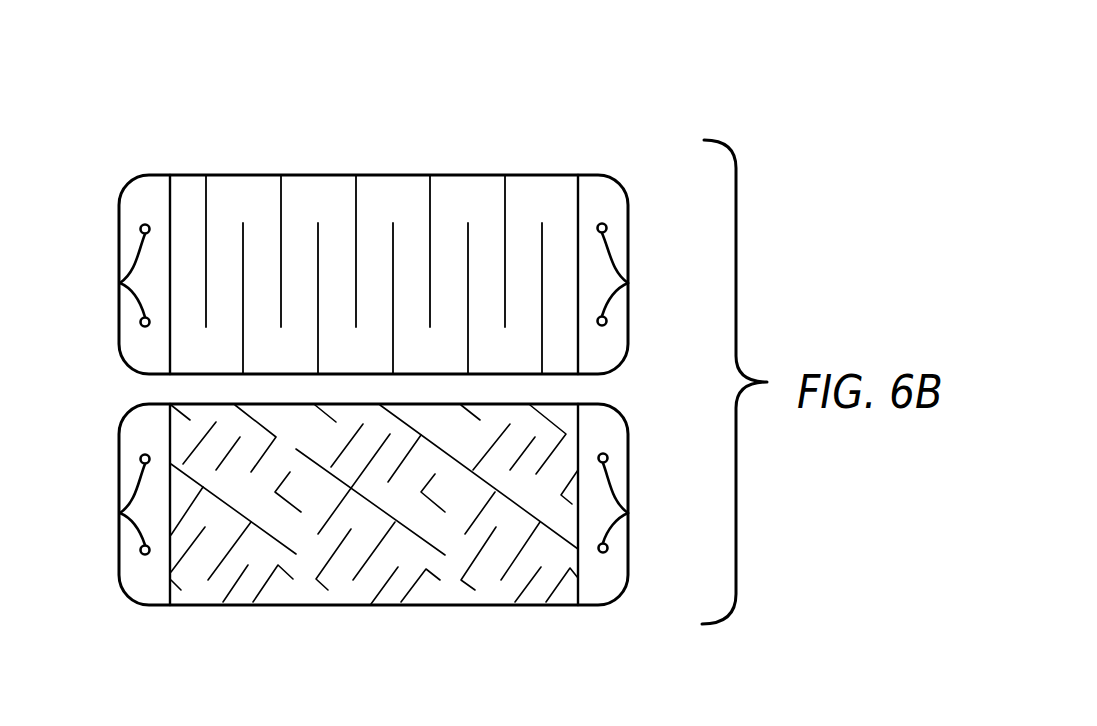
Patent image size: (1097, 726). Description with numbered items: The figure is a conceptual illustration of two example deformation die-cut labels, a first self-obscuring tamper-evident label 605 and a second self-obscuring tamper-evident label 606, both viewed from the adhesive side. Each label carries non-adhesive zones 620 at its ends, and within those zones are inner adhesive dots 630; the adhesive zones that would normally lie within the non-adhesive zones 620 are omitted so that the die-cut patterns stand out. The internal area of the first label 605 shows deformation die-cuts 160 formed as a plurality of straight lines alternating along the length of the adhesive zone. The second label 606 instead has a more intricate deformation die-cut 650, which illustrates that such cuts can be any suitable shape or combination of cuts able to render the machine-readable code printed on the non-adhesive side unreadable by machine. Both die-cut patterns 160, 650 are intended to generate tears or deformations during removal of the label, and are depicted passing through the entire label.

The first self-obscuring tamper-evident label 605 is at (178, 130).
The second self-obscuring tamper-evident label 606 is at (174, 625).
The non-adhesive zones 620 is at (137, 199).
The inner adhesive dots 630 is at (120, 283).
The deformation die-cuts 160 is at (466, 243).
The deformation die-cut 650 is at (418, 536).